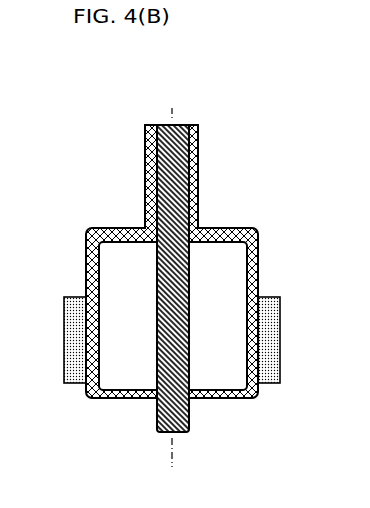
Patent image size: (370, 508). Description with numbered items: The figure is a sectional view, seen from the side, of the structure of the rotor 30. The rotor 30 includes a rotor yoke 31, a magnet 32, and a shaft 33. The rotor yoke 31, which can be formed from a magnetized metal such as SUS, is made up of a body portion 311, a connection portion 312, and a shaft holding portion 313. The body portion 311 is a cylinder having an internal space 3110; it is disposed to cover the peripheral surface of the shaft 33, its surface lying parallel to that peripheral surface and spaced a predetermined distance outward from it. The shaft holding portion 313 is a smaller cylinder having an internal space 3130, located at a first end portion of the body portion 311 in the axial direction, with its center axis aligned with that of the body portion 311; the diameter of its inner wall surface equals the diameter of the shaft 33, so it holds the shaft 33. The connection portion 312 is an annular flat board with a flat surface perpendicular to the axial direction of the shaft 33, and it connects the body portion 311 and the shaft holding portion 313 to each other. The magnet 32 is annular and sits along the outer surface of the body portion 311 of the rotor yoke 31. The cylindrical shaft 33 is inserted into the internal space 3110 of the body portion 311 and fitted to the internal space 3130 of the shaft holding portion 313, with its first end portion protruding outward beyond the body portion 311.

The rotor 30 is at (267, 90).
The rotor yoke 31 is at (287, 163).
The body portion 311 is at (258, 264).
The internal space 3110 is at (231, 290).
The connection portion 312 is at (233, 227).
The shaft holding portion 313 is at (200, 151).
The internal space 3130 is at (196, 180).
The magnet 32 is at (76, 333).
The shaft 33 is at (159, 161).